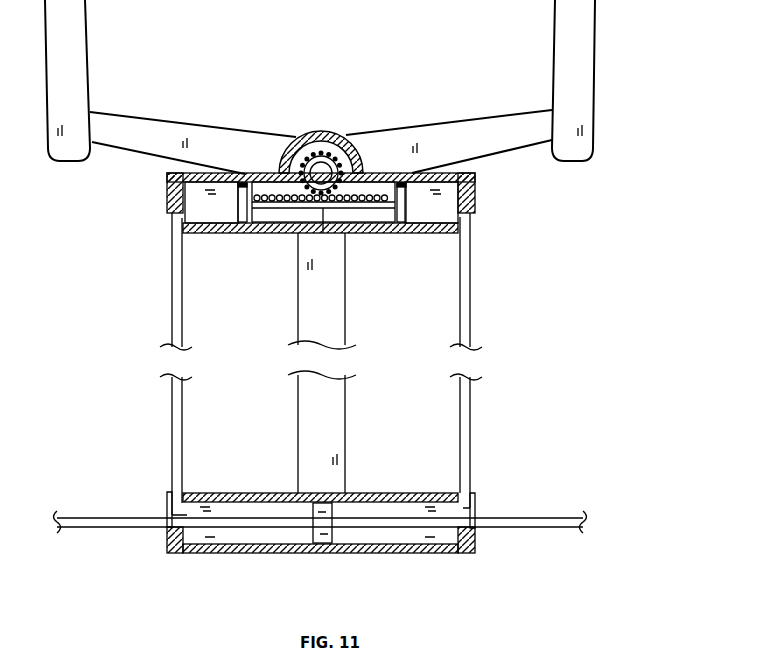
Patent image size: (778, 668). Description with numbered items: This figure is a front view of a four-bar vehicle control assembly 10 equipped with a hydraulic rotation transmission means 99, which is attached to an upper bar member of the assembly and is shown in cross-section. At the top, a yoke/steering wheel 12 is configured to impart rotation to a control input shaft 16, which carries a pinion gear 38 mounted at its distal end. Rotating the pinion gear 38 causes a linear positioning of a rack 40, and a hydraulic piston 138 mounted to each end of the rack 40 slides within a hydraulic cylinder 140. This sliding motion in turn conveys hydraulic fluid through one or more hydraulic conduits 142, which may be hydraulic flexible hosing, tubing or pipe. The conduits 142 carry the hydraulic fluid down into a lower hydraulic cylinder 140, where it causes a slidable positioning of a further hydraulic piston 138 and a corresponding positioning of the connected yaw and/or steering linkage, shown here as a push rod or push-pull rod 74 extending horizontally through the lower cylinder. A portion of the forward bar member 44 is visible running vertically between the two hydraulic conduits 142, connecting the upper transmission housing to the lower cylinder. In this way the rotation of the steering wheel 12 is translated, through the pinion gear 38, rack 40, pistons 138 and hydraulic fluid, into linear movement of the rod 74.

The wind turbine system 10 is at (658, 56).
The yoke/steering wheel 12 is at (457, 118).
The control input shaft 16 is at (290, 150).
The pinion gear 38 is at (325, 150).
The rack 40 is at (322, 209).
The forward bar member 44 is at (298, 300).
The push rod or push-pull rod 74 is at (118, 517).
The hydraulic rotation transmission means 99 is at (167, 207).
The hydraulic piston 138 is at (237, 203).
The hydraulic cylinder 140 is at (473, 210).
The hydraulic conduits 142 is at (172, 320).